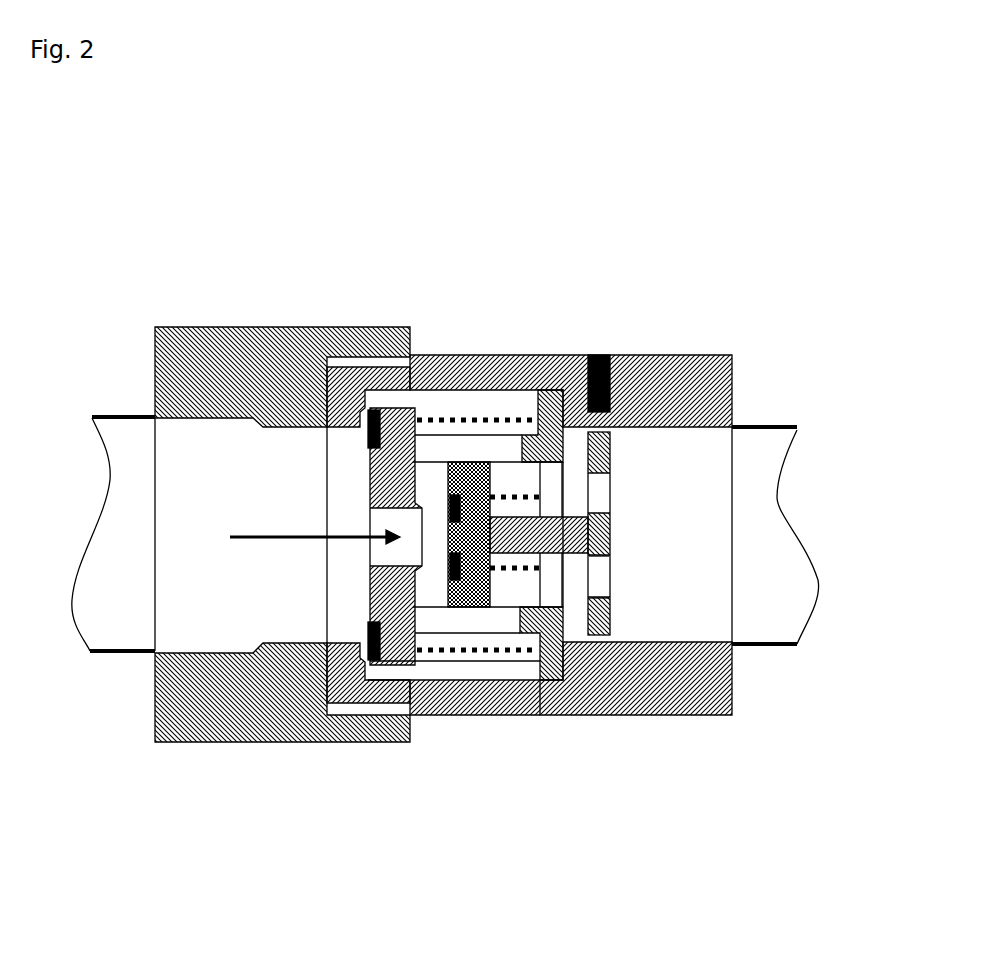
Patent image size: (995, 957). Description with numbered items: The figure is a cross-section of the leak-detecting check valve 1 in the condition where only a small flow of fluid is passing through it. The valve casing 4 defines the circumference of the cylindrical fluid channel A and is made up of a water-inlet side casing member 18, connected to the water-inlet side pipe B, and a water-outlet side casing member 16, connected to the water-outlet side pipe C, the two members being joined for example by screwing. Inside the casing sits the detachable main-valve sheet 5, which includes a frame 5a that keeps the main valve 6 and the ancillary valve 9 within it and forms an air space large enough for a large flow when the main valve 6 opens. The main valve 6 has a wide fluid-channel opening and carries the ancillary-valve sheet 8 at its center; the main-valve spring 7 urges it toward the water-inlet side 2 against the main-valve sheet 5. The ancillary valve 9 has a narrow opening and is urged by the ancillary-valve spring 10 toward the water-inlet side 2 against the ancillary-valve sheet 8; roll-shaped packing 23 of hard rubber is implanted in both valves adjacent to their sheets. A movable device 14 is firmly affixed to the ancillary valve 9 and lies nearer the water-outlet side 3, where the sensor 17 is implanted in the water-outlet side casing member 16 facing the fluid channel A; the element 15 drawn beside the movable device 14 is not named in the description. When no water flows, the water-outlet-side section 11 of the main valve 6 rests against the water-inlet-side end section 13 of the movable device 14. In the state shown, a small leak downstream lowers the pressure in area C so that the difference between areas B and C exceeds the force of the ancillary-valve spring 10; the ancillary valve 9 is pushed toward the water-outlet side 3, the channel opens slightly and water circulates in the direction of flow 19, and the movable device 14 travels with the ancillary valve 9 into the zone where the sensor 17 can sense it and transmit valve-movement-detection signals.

The leak-detecting check valve 1 is at (258, 748).
The water-inlet side 2 is at (267, 580).
The water-outlet side 3 is at (675, 627).
The valve casing 4 is at (430, 697).
The main-valve sheet 5 is at (357, 650).
The frame 5a is at (507, 665).
The main valve 6 is at (428, 623).
The main-valve spring 7 is at (483, 647).
The ancillary-valve sheet 8 is at (408, 500).
The ancillary valve 9 is at (505, 530).
The ancillary-valve spring 10 is at (517, 495).
The water-outlet-side section of the main valve 11 is at (563, 615).
The water-inlet-side end section of the movable device 13 is at (590, 575).
The movable device 14 is at (600, 630).
The guide member 15 is at (600, 483).
The water-outlet side casing member 16 is at (528, 362).
The sensor 17 is at (593, 355).
The water-inlet side casing member 18 is at (250, 335).
The direction of flow of the fluid 19 is at (230, 538).
The packing 23 is at (358, 398).
The fluid channel A is at (548, 497).
The water-inlet side pipe B is at (138, 450).
The water-outlet side pipe C is at (762, 462).